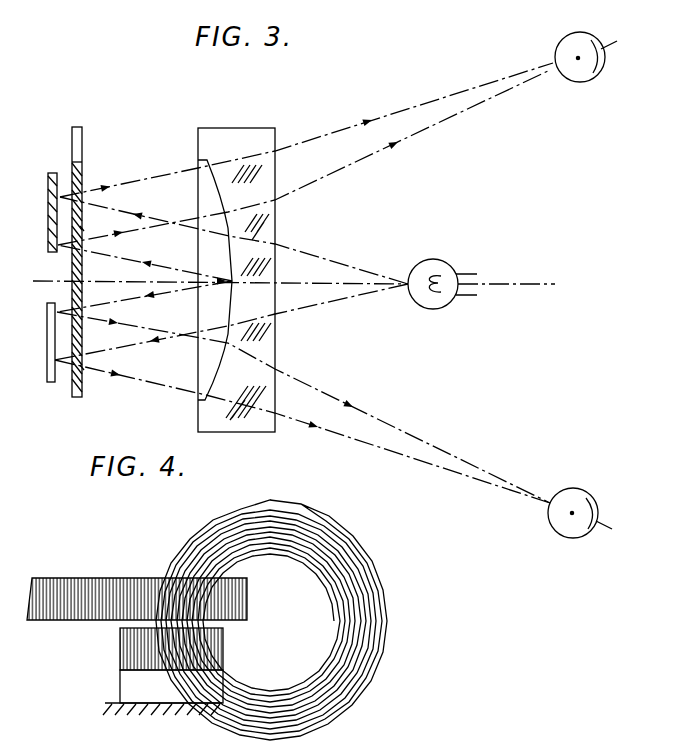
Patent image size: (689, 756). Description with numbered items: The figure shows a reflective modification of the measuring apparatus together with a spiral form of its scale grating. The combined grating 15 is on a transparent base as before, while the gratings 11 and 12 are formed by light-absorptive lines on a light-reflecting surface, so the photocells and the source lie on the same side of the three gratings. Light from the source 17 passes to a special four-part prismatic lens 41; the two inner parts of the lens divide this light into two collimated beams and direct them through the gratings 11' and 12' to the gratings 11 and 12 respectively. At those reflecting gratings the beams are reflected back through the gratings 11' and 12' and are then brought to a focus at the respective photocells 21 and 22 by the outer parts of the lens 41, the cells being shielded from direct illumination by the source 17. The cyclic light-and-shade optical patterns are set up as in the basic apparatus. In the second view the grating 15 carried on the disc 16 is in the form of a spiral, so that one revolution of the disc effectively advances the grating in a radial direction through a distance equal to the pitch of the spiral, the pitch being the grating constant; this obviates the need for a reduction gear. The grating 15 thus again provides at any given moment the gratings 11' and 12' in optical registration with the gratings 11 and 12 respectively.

In FIG. 3, the grating 11 is at (43, 202).
In FIG. 4, the grating 11 is at (137, 558).
In FIG. 3, the grating 12 is at (41, 342).
In FIG. 4, the grating 12 is at (147, 665).
In FIG. 3, the combined grating 15 is at (82, 182).
In FIG. 4, the combined grating 15 is at (363, 568).
In FIG. 4, the disc 16 is at (289, 616).
In FIG. 3, the source 17 is at (440, 310).
In FIG. 3, the photocell 21 is at (587, 82).
In FIG. 3, the photocell 22 is at (577, 489).
In FIG. 3, the four-part prismatic lens 41 is at (223, 128).
In FIG. 3, the grating 11' is at (125, 208).
In FIG. 3, the grating 12' is at (112, 366).